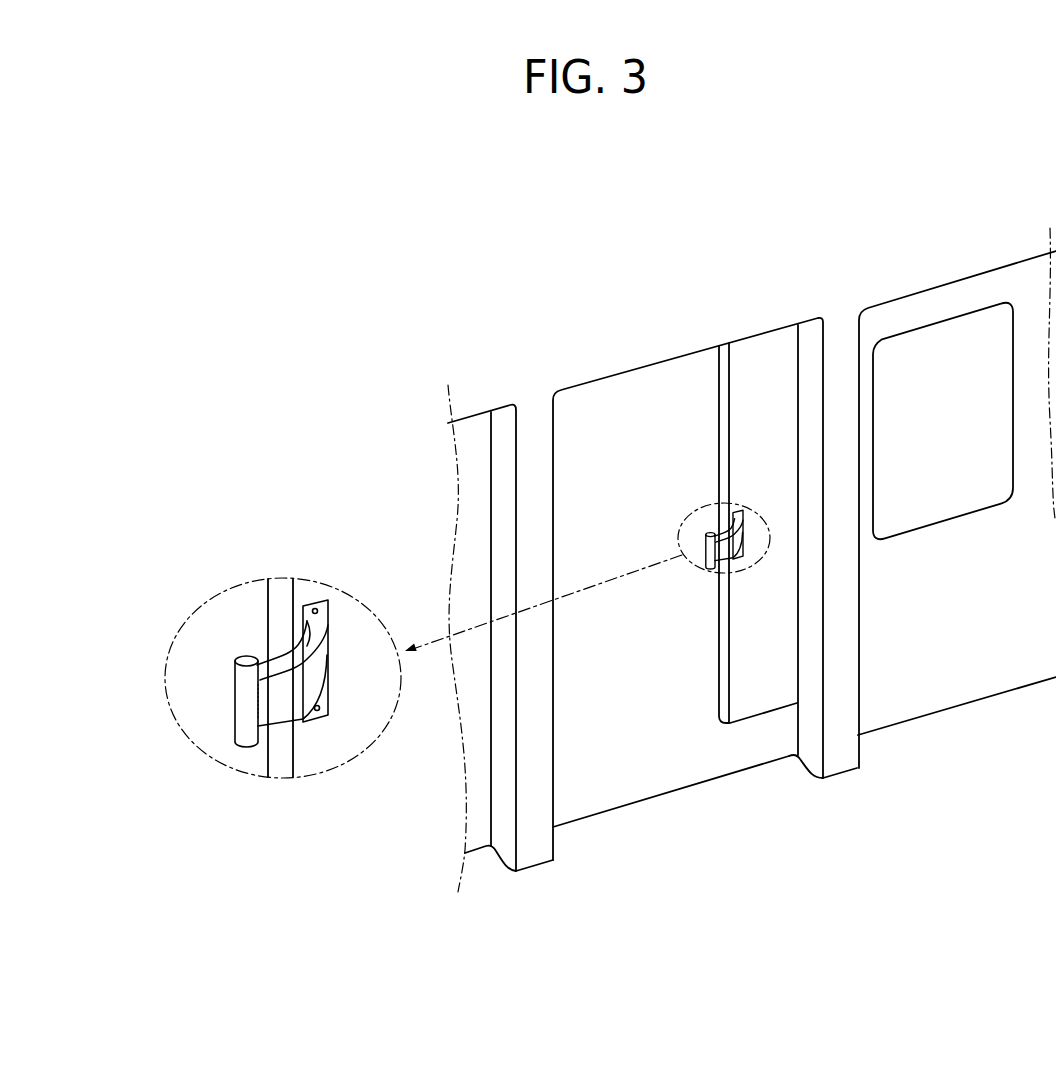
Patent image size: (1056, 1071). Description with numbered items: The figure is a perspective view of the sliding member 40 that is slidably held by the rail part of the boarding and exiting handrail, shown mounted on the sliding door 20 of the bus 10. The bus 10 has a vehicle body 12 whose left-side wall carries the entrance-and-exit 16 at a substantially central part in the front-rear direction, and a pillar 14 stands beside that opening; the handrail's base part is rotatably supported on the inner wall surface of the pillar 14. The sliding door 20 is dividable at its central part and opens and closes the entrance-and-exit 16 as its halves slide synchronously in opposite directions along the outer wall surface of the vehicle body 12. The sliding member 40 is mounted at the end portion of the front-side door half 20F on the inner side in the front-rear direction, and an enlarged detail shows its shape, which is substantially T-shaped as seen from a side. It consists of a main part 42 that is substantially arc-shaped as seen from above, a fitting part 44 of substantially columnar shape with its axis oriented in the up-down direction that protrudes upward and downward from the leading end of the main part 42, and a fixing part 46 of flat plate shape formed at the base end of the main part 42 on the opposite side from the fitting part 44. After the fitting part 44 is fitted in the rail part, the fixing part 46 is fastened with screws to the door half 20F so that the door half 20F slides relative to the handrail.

The bus 10 is at (938, 260).
The vehicle body 12 is at (975, 701).
The pillar 14 is at (845, 603).
The entrance-and-exit 16 is at (797, 720).
The sliding door 20 is at (750, 485).
The front-side door half 20F is at (758, 370).
The sliding member 40 is at (424, 665).
The main part 42 is at (285, 693).
The fitting part 44 is at (245, 700).
The fixing part 46 is at (320, 612).